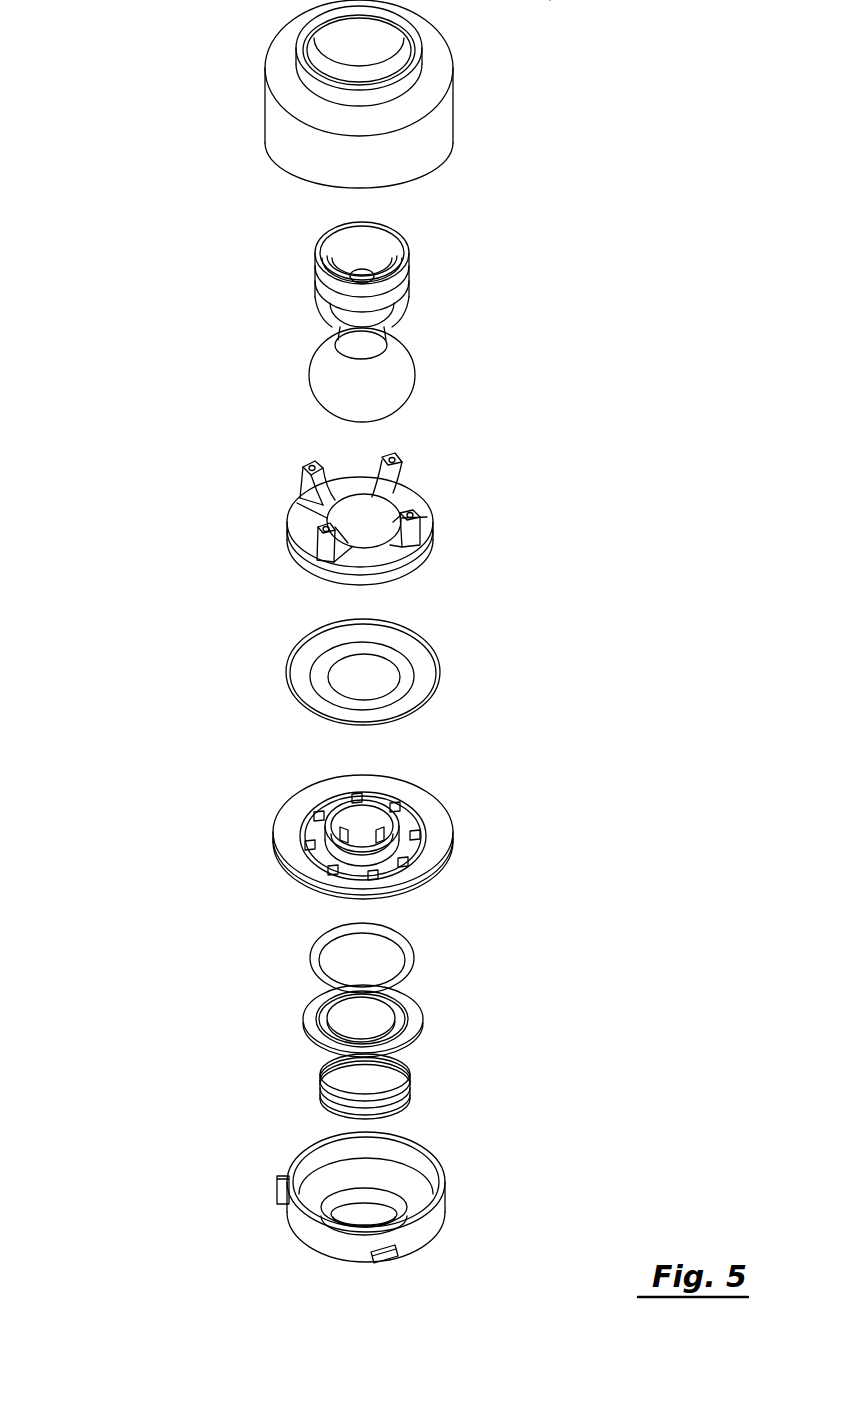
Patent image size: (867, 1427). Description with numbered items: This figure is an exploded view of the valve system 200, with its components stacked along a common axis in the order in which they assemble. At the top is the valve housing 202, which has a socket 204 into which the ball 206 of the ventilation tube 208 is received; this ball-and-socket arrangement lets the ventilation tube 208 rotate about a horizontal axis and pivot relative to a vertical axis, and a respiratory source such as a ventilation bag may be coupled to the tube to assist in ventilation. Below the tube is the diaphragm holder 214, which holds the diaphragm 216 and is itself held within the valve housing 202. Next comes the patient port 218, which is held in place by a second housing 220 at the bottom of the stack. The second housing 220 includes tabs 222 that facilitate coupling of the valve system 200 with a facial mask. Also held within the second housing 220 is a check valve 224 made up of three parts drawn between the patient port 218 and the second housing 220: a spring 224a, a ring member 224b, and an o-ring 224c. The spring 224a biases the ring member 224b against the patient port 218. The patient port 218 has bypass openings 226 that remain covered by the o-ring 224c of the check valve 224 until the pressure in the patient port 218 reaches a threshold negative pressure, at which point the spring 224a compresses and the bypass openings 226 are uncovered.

The valve system 200 is at (552, 268).
The valve housing 202 is at (265, 54).
The socket 204 is at (376, 47).
The ball 206 is at (310, 356).
The ventilation tube 208 is at (372, 262).
The diaphragm holder 214 is at (415, 461).
The diaphragm 216 is at (287, 650).
The patient port 218 is at (459, 839).
The second housing 220 is at (448, 1204).
The tabs 222 is at (277, 1183).
The check valve 224 is at (292, 945).
The spring 224a is at (417, 1082).
The ring member 224b is at (424, 1002).
The o-ring 224c is at (411, 939).
The bypass openings 226 is at (318, 811).